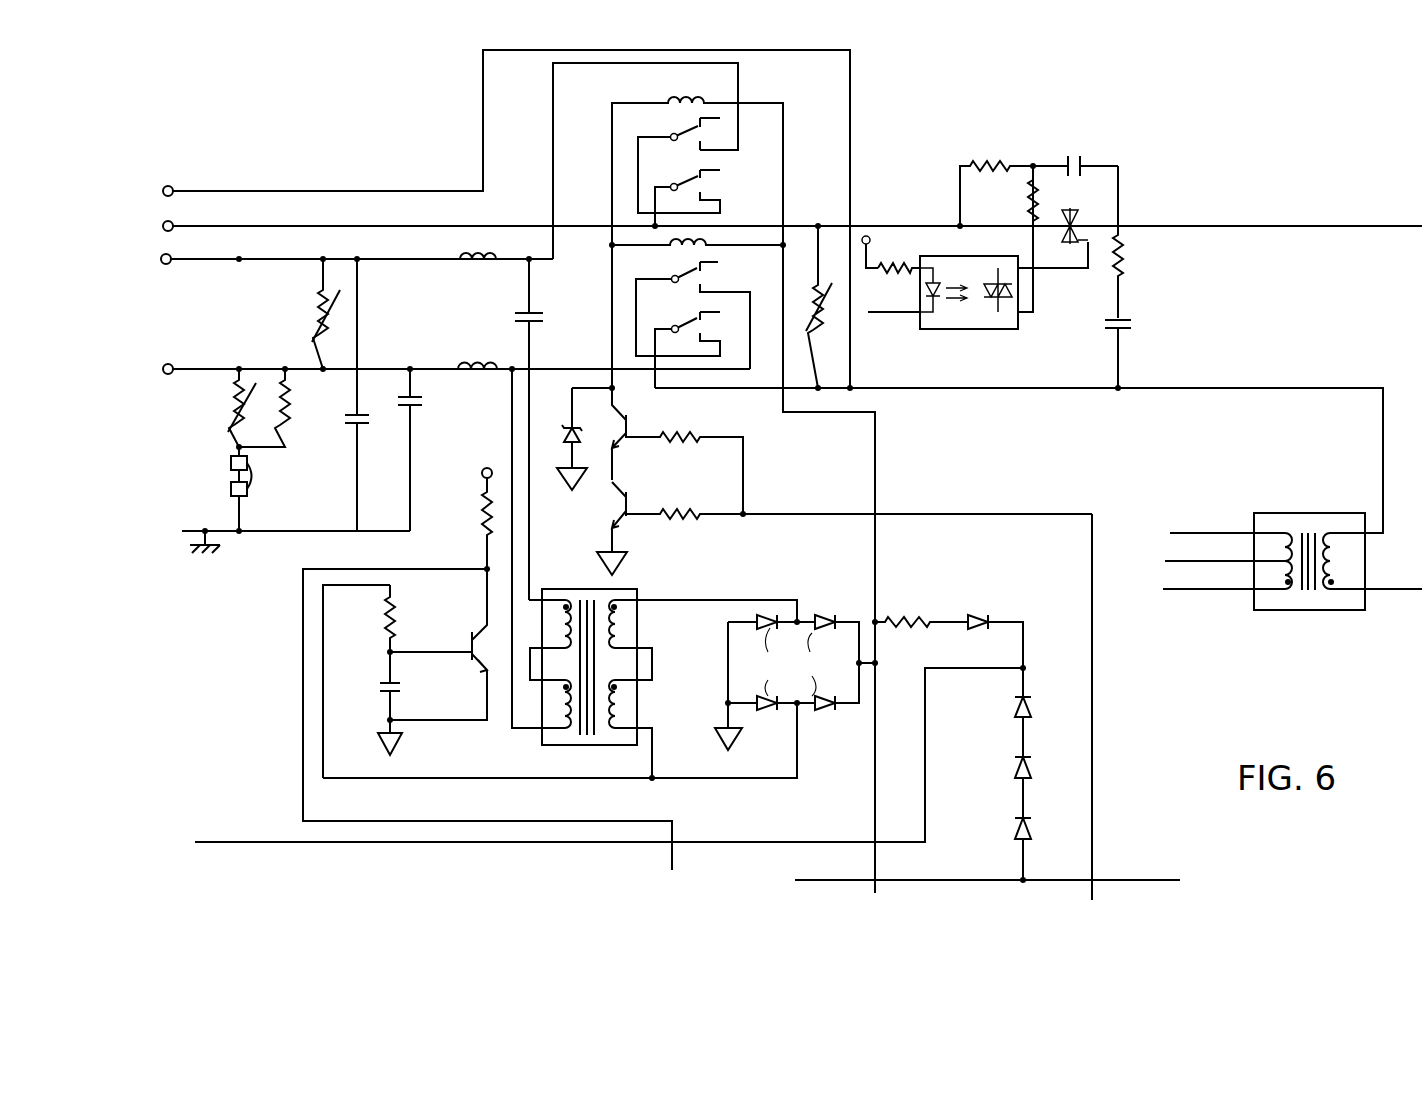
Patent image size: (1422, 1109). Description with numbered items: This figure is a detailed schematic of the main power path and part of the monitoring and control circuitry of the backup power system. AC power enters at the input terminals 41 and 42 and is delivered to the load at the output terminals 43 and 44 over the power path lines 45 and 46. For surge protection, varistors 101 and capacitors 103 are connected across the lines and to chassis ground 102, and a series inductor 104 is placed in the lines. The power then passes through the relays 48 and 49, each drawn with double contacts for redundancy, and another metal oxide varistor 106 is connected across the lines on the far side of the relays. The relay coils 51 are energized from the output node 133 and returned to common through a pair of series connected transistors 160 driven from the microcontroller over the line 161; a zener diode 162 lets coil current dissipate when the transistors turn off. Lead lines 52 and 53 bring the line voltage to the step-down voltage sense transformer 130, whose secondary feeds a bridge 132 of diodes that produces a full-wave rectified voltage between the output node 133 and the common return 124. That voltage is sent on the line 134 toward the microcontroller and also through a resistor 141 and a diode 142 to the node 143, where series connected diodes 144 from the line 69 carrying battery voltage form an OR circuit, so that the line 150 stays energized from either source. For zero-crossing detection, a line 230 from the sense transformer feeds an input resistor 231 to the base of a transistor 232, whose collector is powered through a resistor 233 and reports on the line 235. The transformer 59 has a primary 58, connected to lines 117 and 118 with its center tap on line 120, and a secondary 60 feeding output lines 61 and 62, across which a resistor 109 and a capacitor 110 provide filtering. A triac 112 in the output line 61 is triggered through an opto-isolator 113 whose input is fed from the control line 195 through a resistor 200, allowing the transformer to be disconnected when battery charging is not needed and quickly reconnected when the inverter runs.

The input terminal 41 is at (171, 262).
The input terminal 42 is at (171, 365).
The output terminal 43 is at (174, 228).
The output terminal 44 is at (171, 187).
The power path line 45 is at (553, 164).
The power path line 46 is at (406, 187).
The relay 48 is at (756, 162).
The relay 49 is at (734, 279).
The relay coil 51 is at (678, 100).
The lead line 52 is at (529, 531).
The lead line 53 is at (512, 424).
The primary 58 is at (1280, 535).
The transformer 59 is at (1331, 623).
The secondary 60 is at (1343, 561).
The output line 61 is at (1322, 224).
The output line 62 is at (1030, 387).
The line 69 is at (968, 880).
The varistor 101 is at (318, 305).
The chassis ground 102 is at (222, 555).
The capacitor 103 is at (395, 405).
The series inductor 104 is at (497, 268).
The metal oxide varistor 106 is at (812, 292).
The resistor 109 is at (1125, 262).
The capacitor 110 is at (1124, 333).
The triac 112 is at (1079, 217).
The opto-isolator 113 is at (958, 331).
The line 117 is at (1200, 591).
The line 118 is at (1192, 532).
The line 120 is at (1170, 559).
The common return 124 is at (735, 738).
The step-down voltage sense transformer 130 is at (620, 590).
The bridge 132 is at (805, 607).
The output node 133 is at (878, 662).
The line 134 is at (875, 860).
The resistor 141 is at (898, 613).
The diode 142 is at (976, 613).
The node 143 is at (1026, 672).
The series connected diodes 144 is at (1033, 713).
The line 150 is at (928, 806).
The transistor 160 is at (628, 418).
The line 161 is at (880, 521).
The zener diode 162 is at (563, 436).
The output line 195 is at (882, 318).
The resistor 200 is at (896, 285).
The line 230 is at (518, 778).
The input resistor 231 is at (398, 628).
The transistor 232 is at (464, 668).
The resistor 233 is at (480, 532).
The line 235 is at (303, 688).